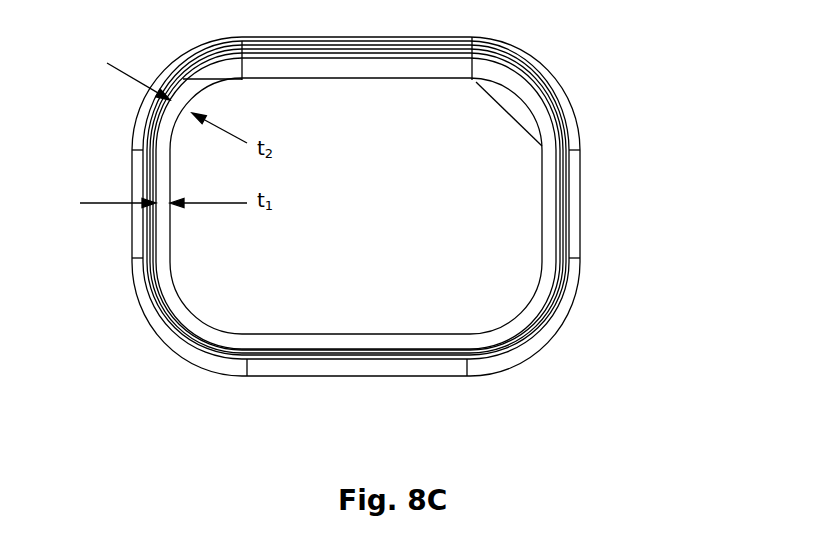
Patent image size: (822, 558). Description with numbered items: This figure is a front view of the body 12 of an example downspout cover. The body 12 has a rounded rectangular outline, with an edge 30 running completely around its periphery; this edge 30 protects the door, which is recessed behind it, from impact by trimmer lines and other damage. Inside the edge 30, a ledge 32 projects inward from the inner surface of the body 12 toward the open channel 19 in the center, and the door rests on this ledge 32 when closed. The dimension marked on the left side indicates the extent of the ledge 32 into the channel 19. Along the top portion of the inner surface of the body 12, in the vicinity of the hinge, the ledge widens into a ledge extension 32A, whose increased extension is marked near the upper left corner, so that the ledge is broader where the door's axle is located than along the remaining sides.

The body 12 is at (630, 83).
The channel 19 is at (372, 206).
The edge 30 is at (387, 207).
The ledge 32 is at (356, 200).
The ledge extension 32A is at (287, 187).